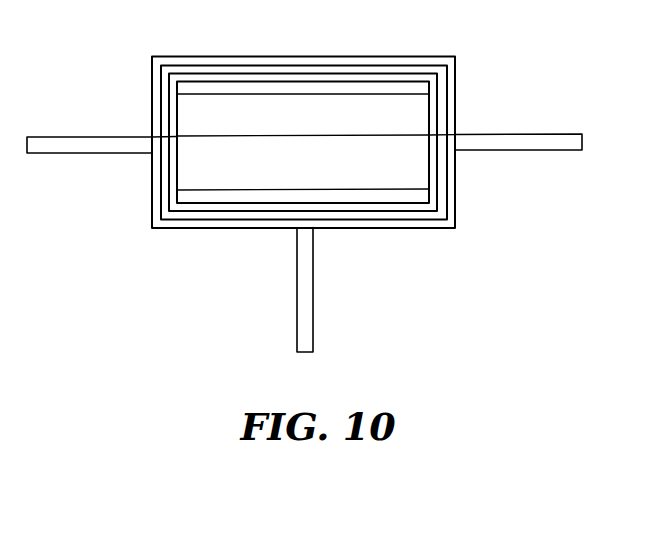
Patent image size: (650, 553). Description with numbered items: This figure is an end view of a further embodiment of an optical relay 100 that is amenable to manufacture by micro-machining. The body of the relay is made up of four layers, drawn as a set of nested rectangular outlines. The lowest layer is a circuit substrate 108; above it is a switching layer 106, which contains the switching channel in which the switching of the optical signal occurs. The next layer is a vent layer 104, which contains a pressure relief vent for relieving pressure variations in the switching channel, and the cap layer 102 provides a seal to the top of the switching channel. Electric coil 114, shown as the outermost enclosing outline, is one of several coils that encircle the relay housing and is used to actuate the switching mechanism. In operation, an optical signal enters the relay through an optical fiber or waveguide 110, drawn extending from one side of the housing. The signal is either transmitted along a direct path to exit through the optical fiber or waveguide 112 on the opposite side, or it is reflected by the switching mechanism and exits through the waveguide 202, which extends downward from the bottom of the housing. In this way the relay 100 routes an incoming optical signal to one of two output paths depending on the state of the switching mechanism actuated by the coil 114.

The optical relay 100 is at (93, 46).
The cap layer 102 is at (202, 90).
The vent layer 104 is at (408, 107).
The switching layer 106 is at (195, 170).
The circuit substrate 108 is at (417, 195).
The optical fiber or waveguide 110 is at (550, 135).
The optical fiber or waveguide 112 is at (38, 137).
The electric coil 114 is at (458, 66).
The waveguide 202 is at (295, 268).